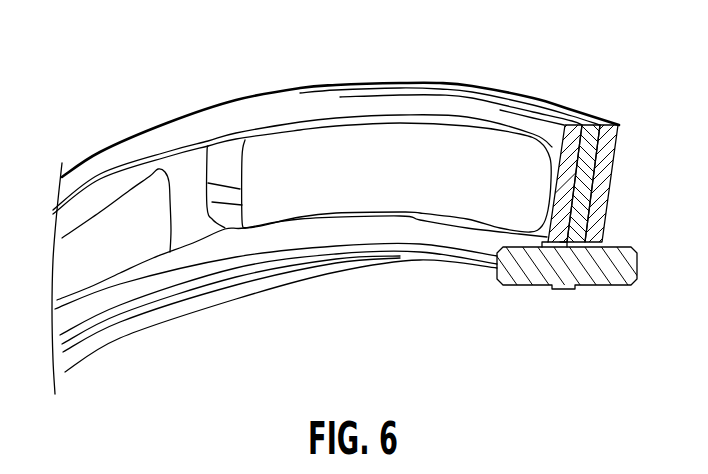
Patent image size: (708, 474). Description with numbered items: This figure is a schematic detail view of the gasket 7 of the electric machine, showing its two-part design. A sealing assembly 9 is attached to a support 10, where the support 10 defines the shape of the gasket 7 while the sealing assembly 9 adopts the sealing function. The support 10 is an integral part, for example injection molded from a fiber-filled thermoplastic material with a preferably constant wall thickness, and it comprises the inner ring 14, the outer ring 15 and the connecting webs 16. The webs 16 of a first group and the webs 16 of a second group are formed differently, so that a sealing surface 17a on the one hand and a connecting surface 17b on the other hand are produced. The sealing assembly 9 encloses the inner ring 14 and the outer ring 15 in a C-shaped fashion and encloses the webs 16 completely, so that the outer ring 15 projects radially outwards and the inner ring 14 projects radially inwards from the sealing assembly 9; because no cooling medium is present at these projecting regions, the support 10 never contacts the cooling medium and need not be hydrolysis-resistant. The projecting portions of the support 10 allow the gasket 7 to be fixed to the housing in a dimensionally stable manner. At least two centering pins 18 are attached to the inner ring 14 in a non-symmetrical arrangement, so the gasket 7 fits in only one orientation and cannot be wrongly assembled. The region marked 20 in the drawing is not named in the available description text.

The gasket 7 is at (84, 98).
The sealing assembly 9 is at (187, 127).
The support 10 is at (262, 281).
The inner ring 14 is at (363, 252).
The outer ring 15 is at (428, 81).
The webs 16 is at (600, 195).
The sealing surface 17a is at (552, 150).
The connecting surface 17b is at (178, 199).
The centering pins 18 is at (604, 287).
The opening 20 is at (90, 270).